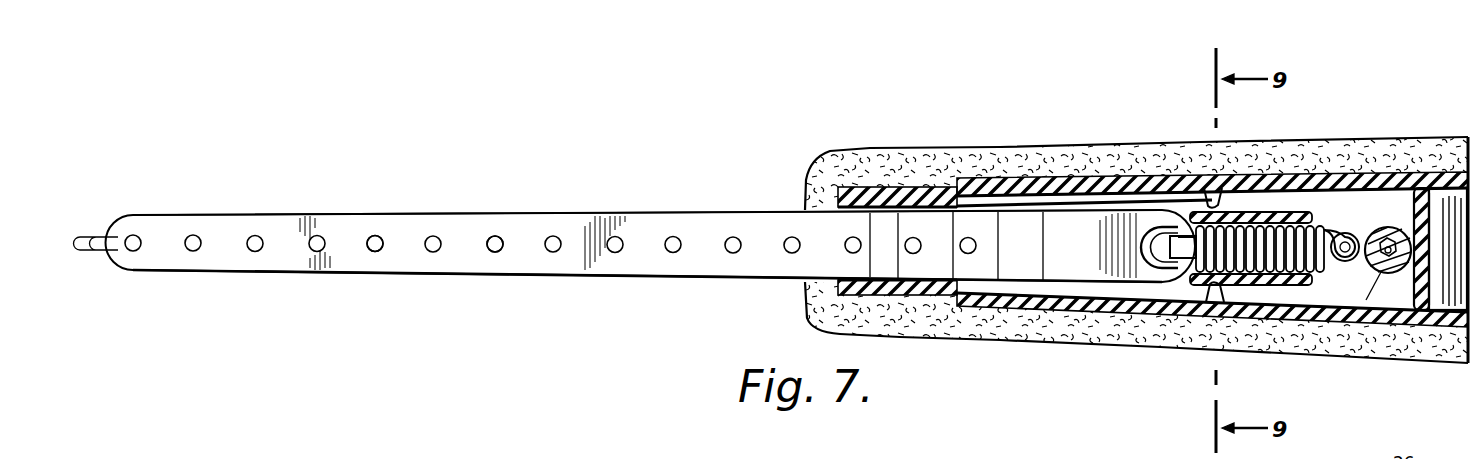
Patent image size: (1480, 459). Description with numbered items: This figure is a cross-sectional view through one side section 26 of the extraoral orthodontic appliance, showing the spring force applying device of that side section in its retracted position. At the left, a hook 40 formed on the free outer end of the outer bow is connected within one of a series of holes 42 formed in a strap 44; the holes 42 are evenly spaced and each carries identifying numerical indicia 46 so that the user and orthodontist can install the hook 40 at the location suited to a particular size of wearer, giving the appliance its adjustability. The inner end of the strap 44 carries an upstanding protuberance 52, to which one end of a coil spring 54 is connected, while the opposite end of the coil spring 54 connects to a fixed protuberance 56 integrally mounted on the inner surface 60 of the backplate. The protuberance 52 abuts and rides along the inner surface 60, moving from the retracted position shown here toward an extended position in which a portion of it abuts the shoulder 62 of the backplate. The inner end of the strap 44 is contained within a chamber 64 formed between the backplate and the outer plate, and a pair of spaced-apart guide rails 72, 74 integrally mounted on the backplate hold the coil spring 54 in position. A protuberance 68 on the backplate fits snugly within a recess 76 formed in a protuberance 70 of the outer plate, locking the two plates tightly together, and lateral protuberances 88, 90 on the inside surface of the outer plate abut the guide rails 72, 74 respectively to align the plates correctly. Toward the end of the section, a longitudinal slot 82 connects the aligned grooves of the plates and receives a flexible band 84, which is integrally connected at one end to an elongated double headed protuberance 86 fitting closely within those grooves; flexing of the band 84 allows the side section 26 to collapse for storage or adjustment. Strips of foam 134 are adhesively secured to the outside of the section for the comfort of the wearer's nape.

The side section 26 is at (1370, 98).
The hook 40 is at (100, 256).
The holes 42 is at (375, 240).
The strap 44 is at (652, 258).
The identifying numerical indicia 46 is at (508, 244).
The upstanding protuberance 52 is at (1154, 224).
The coil spring 54 is at (1297, 286).
The fixed protuberance 56 is at (1345, 233).
The inner surface 60 is at (1332, 298).
The shoulder 62 is at (967, 293).
The chamber 64 is at (1110, 292).
The protuberance 68 is at (1394, 228).
The protuberance 70 is at (1376, 236).
The guide rail 72 is at (1257, 214).
The guide rail 74 is at (1257, 285).
The recess 76 is at (1362, 300).
The longitudinal slot 82 is at (1442, 190).
The flexible band 84 is at (1447, 300).
The elongated double headed protuberance 86 is at (1412, 284).
The lateral protuberance 88 is at (1212, 188).
The lateral protuberance 90 is at (1213, 288).
The strips of foam 134 is at (838, 172).